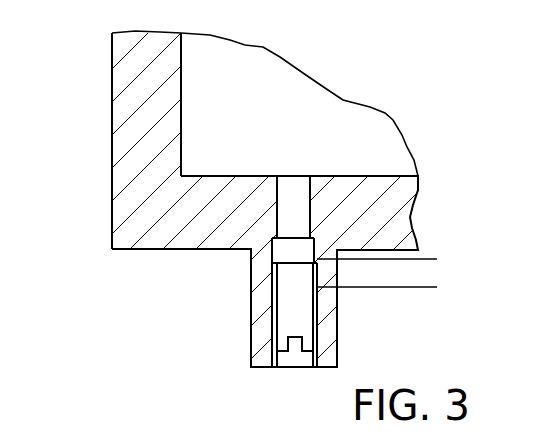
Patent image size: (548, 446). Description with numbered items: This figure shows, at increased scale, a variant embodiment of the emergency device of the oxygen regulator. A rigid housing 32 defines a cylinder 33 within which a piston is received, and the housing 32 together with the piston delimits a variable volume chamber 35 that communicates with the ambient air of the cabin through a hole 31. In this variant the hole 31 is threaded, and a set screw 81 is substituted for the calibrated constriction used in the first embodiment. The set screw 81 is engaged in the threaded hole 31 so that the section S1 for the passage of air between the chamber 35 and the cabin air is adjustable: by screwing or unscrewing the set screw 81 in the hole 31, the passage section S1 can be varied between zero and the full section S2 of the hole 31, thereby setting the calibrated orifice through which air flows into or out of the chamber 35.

The hole 31 is at (292, 200).
The rigid housing 32 is at (128, 93).
The cylinder 33 is at (388, 177).
The variable volume chamber 35 is at (303, 124).
The set screw 81 is at (290, 303).
The section for the passage of air S1 is at (356, 277).
The section of the hole S2 is at (434, 243).